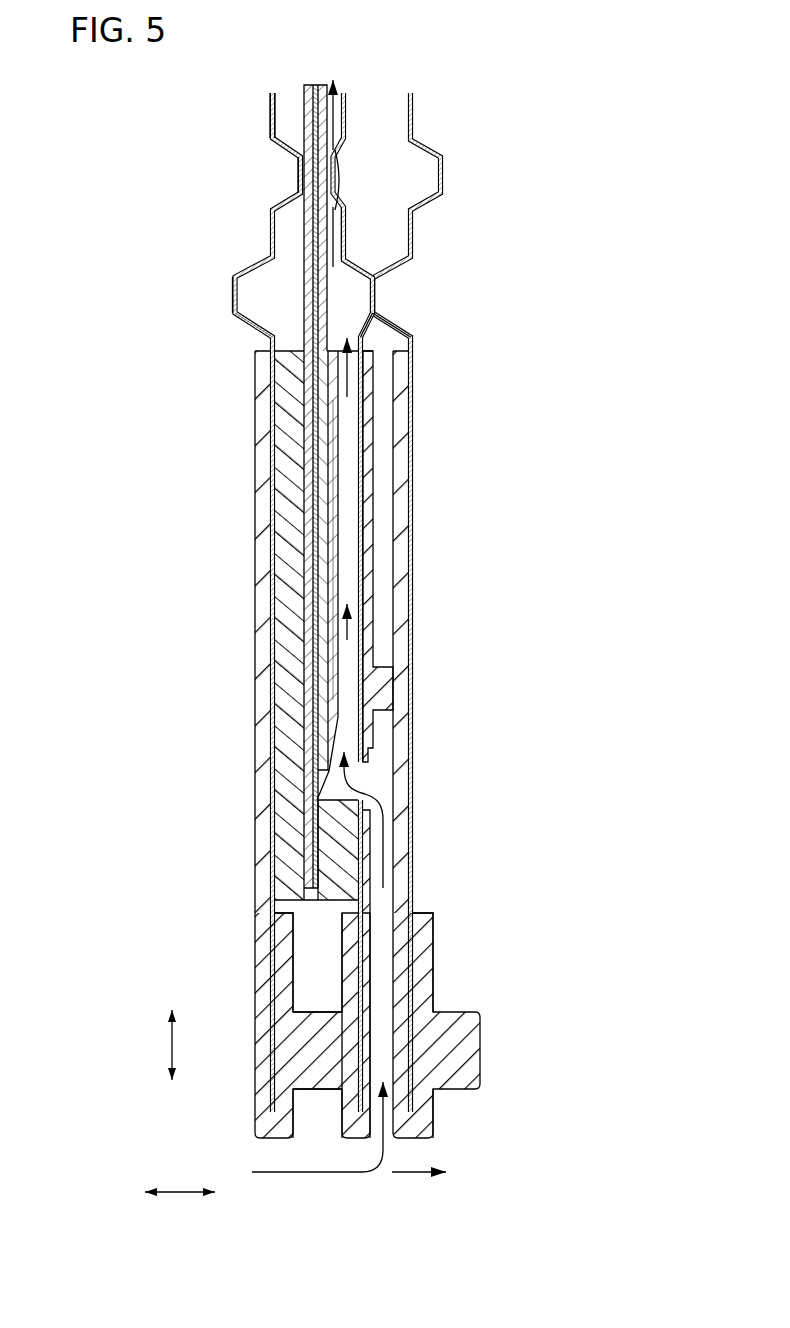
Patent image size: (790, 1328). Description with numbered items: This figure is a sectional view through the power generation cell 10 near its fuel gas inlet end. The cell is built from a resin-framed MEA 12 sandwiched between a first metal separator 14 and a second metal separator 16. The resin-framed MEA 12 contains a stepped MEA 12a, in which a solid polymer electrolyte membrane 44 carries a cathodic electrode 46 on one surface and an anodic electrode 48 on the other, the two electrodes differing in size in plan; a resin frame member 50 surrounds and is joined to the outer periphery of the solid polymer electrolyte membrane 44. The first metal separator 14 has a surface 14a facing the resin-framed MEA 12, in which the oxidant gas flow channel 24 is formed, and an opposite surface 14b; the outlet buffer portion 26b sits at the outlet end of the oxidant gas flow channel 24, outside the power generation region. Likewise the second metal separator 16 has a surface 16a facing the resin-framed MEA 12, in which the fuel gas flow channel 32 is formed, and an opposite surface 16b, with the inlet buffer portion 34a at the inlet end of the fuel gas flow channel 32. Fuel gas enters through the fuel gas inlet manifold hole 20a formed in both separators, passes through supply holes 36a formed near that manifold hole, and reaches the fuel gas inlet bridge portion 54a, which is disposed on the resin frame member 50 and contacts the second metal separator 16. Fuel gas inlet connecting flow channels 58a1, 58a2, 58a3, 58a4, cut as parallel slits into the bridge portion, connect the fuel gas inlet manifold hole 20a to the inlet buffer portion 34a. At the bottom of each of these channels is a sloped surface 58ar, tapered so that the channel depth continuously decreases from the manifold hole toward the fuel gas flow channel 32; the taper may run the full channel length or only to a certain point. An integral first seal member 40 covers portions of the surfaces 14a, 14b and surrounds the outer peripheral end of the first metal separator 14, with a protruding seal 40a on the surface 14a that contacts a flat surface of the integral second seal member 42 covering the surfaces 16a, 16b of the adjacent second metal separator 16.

The power generation cell 10 is at (425, 51).
The resin-framed MEA 12 is at (175, 545).
The MEA 12a is at (303, 567).
The resin frame member 50 is at (254, 586).
The first metal separator 14 is at (267, 139).
The surface 14a is at (262, 323).
The surface 14b is at (232, 298).
The second metal separator 16 is at (349, 108).
The surface 16a is at (376, 293).
The surface 16b is at (348, 233).
The fuel gas inlet manifold hole 20a is at (282, 1176).
The oxidant gas flow channel 24 is at (282, 110).
The outlet buffer portion 26b is at (300, 187).
The fuel gas flow channel 32 is at (340, 123).
The inlet buffer portion 34a is at (339, 178).
The supply holes 36a is at (362, 774).
The first seal member 40 is at (258, 1122).
The protruding seal 40a is at (323, 1082).
The second seal member 42 is at (351, 1140).
The solid polymer electrolyte membrane 44 is at (305, 95).
The cathodic electrode 46 is at (309, 85).
The anodic electrode 48 is at (322, 85).
The fuel gas inlet bridge portion 54a is at (286, 892).
The fuel gas inlet connecting flow channel 58a1 is at (345, 484).
The fuel gas inlet connecting flow channel 58a2 is at (444, 450).
The fuel gas inlet connecting flow channel 58a3 is at (471, 531).
The fuel gas inlet connecting flow channel 58a4 is at (497, 581).
The sloped surface 58ar is at (336, 732).